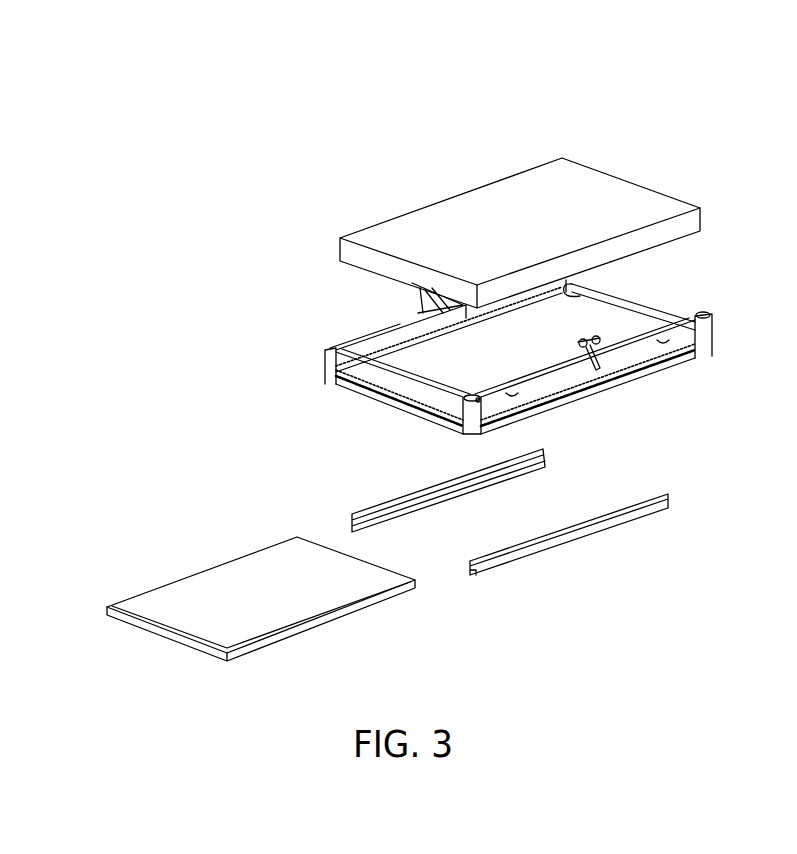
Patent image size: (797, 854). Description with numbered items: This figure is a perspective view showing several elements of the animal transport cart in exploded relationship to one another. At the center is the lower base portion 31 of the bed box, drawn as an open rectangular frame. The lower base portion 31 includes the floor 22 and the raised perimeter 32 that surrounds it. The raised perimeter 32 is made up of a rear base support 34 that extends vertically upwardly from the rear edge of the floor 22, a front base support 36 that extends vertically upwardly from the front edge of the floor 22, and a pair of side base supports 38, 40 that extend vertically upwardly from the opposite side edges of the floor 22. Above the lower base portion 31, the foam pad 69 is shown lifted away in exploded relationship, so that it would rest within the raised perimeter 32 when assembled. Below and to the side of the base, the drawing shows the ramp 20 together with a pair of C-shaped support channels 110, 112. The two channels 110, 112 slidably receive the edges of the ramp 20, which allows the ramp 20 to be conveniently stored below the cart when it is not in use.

The ramp 20 is at (250, 607).
The floor 22 is at (483, 368).
The lower base portion 31 is at (696, 347).
The raised perimeter 32 is at (334, 350).
The rear base support 34 is at (647, 313).
The front base support 36 is at (382, 387).
The side base support 38 is at (635, 362).
The side base support 40 is at (417, 332).
The foam pad 69 is at (610, 187).
The C-shaped support channel 110 is at (607, 527).
The C-shaped support channel 112 is at (473, 482).